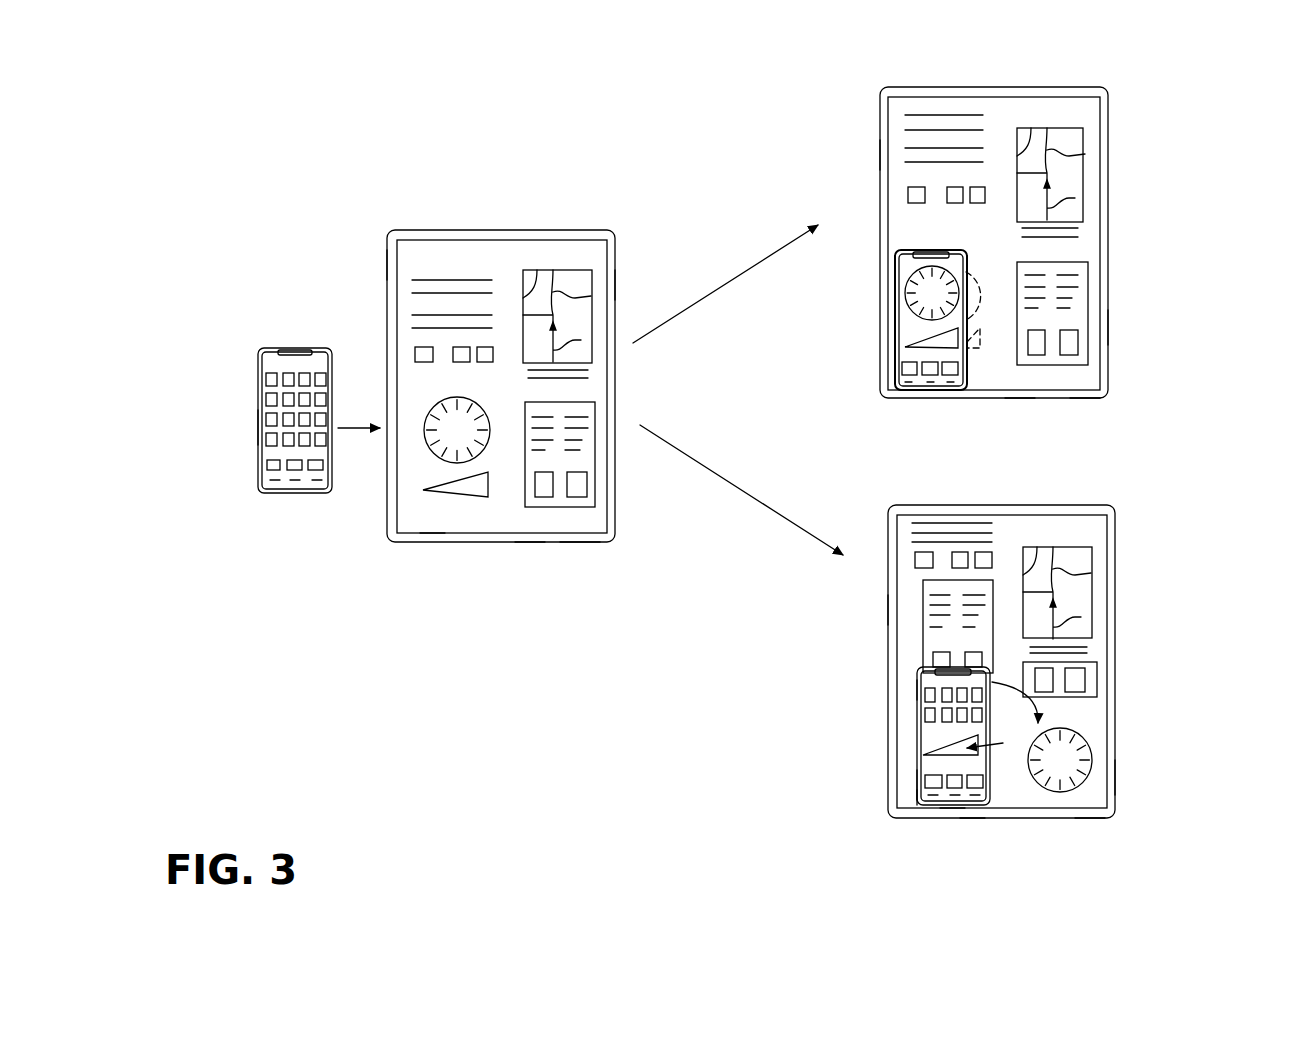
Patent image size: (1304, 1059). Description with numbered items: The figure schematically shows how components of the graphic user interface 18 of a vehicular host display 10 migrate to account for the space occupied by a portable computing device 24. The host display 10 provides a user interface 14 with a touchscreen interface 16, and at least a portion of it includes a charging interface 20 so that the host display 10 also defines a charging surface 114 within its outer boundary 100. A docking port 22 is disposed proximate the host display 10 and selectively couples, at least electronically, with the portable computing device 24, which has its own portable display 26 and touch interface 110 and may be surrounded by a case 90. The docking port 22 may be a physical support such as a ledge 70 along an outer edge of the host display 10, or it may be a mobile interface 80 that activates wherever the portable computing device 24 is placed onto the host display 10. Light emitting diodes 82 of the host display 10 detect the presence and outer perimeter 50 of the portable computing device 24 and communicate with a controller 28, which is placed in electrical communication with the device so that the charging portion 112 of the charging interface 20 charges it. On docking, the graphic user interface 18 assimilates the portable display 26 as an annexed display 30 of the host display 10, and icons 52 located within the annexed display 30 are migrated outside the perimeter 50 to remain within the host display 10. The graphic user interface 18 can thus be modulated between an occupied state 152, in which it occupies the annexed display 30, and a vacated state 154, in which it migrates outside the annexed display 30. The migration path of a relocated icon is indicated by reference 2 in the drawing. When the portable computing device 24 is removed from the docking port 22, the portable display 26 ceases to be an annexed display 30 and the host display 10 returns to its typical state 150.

The dial widget 2 is at (1080, 747).
The host display 10 is at (553, 218).
The user interface 14 is at (492, 258).
The touchscreen interface 16 is at (580, 263).
The graphic user interface 18 is at (510, 497).
The charging interface 20 is at (425, 258).
The docking port 22 is at (433, 532).
The portable computing device 24 is at (252, 427).
The portable display 26 is at (270, 453).
The controller 28 is at (572, 537).
The annexed display 30 is at (942, 390).
The perimeter 50 is at (910, 250).
The icons 52 is at (438, 455).
The ledge 70 is at (528, 540).
The mobile interface 80 is at (381, 262).
The light emitting diodes 82 is at (600, 373).
The case 90 is at (275, 349).
The boundary 100 is at (615, 283).
The touch interface 110 is at (320, 368).
The charging portion 112 is at (925, 237).
The charging surface 114 is at (418, 515).
The typical state 150 is at (628, 318).
The occupied state 152 is at (947, 237).
The vacated state 154 is at (920, 817).